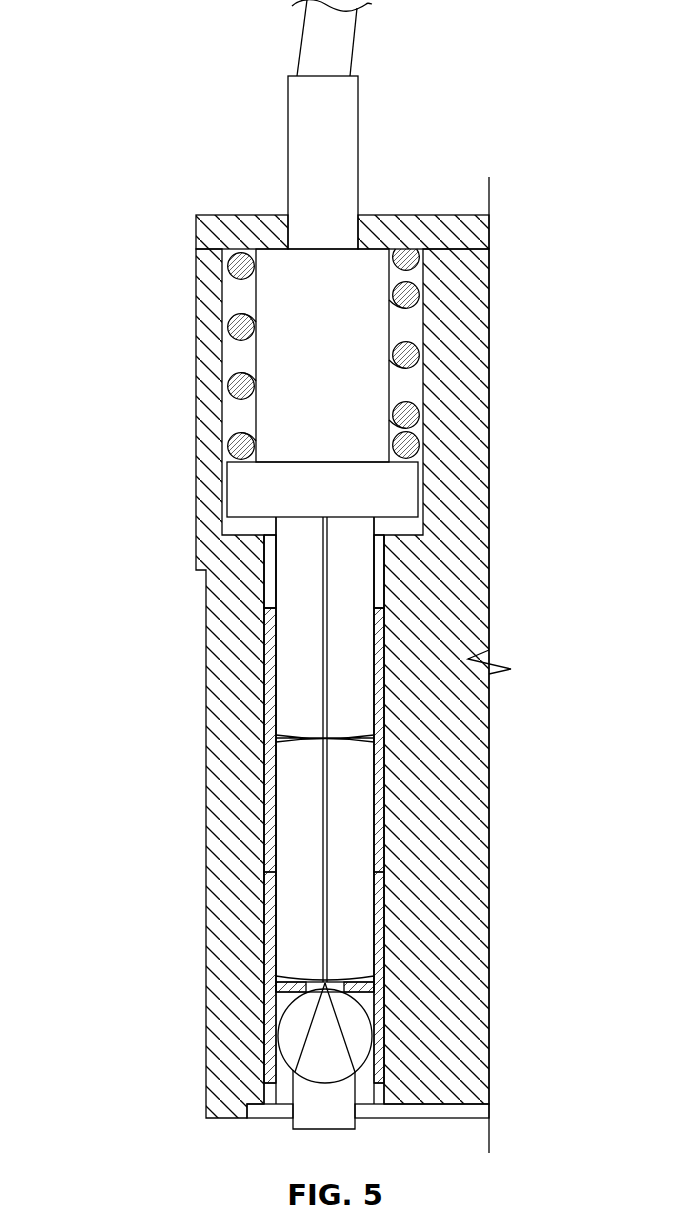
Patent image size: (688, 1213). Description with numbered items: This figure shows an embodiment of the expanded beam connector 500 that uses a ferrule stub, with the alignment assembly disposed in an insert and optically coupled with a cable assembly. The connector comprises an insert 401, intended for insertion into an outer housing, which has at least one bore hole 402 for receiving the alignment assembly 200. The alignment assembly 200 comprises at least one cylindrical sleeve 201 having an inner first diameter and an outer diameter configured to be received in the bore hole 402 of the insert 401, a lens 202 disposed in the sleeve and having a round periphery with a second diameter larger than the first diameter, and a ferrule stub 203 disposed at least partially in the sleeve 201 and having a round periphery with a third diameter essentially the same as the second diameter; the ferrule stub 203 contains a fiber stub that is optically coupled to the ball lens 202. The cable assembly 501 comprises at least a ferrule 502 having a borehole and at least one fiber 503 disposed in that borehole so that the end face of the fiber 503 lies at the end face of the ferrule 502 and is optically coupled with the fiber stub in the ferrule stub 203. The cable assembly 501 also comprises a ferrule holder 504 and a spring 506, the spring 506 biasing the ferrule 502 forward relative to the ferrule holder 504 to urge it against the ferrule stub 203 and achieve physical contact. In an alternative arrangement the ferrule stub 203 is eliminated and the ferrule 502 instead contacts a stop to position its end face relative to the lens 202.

The expanded beam connector 500 is at (152, 58).
The cable assembly 501 is at (382, 165).
The spring 506 is at (335, 372).
The ferrule holder 504 is at (413, 295).
The insert 401 is at (462, 375).
The bore hole 402 is at (378, 570).
The fiber 503 is at (323, 633).
The ferrule 502 is at (347, 687).
The alignment assembly 200 is at (252, 719).
The ferrule stub 203 is at (347, 813).
The cylindrical sleeve 201 is at (378, 925).
The lens 202 is at (355, 1055).